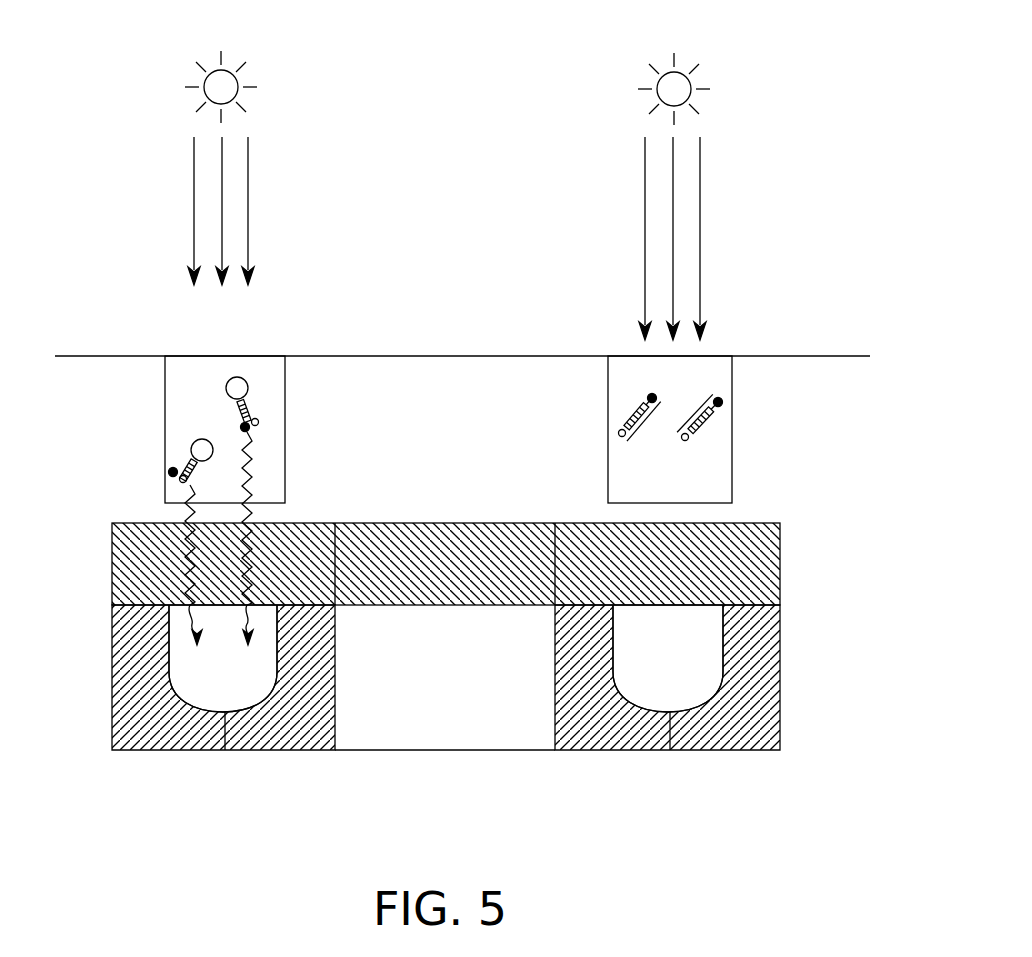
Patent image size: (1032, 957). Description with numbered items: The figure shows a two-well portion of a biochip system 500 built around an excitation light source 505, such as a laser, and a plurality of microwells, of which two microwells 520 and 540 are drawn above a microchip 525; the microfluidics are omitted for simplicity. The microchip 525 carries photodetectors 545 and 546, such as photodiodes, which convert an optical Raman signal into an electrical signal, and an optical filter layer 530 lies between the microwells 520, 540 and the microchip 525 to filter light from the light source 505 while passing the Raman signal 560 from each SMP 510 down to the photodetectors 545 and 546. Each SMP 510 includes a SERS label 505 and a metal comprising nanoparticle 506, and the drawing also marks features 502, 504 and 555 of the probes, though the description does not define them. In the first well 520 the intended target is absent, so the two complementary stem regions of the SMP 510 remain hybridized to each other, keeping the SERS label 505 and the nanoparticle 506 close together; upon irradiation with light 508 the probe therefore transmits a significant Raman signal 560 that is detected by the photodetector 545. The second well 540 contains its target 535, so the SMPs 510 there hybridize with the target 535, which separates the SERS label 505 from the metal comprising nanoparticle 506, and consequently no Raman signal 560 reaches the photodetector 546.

The biochip system 500 is at (443, 23).
The chromophore head group 502 is at (233, 402).
The linker 504 is at (250, 407).
The excitation light source / SERS label 505 is at (240, 80).
The metal comprising nanoparticle 506 is at (259, 421).
The light 508 is at (194, 208).
The SMP 510 is at (263, 371).
The microwell 520 is at (165, 376).
The microchip 525 is at (810, 674).
The optical filter layer 530 is at (780, 567).
The target 535 is at (703, 400).
The well 540 is at (733, 430).
The photodetector 545 is at (232, 682).
The photodetector 546 is at (683, 687).
The linker of second molecule 555 is at (640, 422).
The Raman signal 560 is at (190, 591).